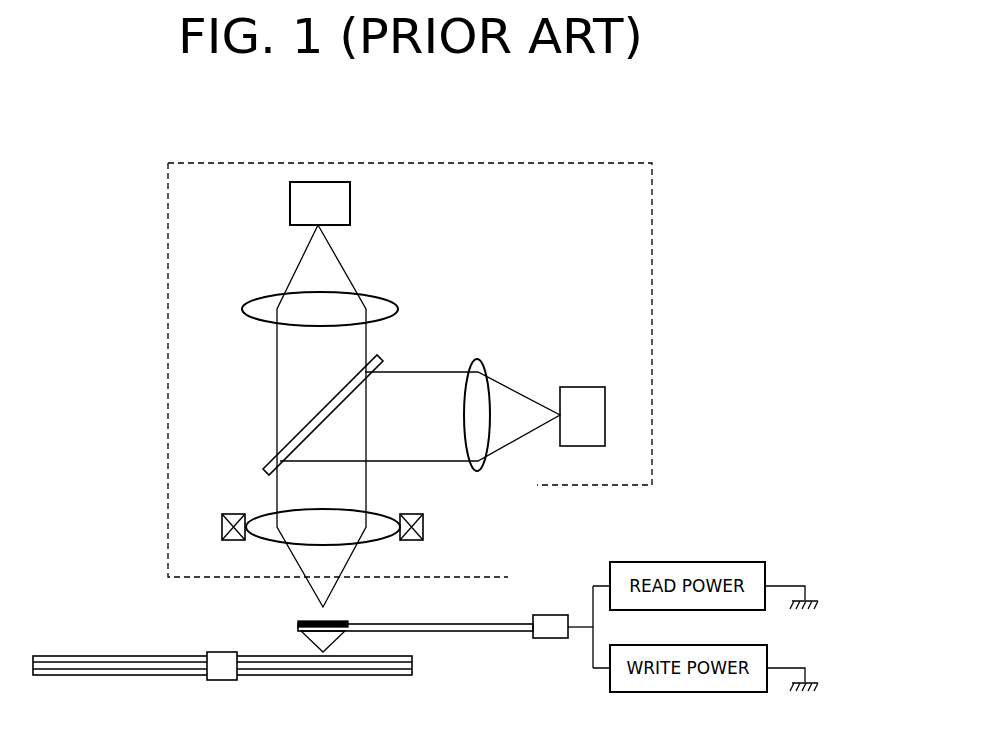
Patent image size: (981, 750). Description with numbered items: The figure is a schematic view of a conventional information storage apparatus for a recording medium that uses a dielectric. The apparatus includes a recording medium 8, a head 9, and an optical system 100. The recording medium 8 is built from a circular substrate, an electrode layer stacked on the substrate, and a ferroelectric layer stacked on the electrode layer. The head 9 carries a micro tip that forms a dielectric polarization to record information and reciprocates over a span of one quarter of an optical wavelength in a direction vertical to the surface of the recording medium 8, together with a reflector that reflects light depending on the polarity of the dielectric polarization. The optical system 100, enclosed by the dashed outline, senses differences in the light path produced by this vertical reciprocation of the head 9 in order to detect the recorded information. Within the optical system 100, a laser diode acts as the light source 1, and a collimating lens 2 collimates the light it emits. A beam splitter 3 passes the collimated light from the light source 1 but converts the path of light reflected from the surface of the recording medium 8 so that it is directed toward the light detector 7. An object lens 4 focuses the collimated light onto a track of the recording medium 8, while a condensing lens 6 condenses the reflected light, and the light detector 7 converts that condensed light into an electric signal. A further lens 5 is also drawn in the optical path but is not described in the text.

The optical system 100 is at (168, 250).
The light source 1 is at (350, 203).
The collimating lens 2 is at (398, 305).
The beam splitter 3 is at (386, 351).
The object lens 4 is at (222, 526).
The objective lens 5 is at (387, 517).
The condensing lens 6 is at (477, 358).
The light detector 7 is at (583, 387).
The recording medium 8 is at (318, 680).
The head 9 is at (490, 632).